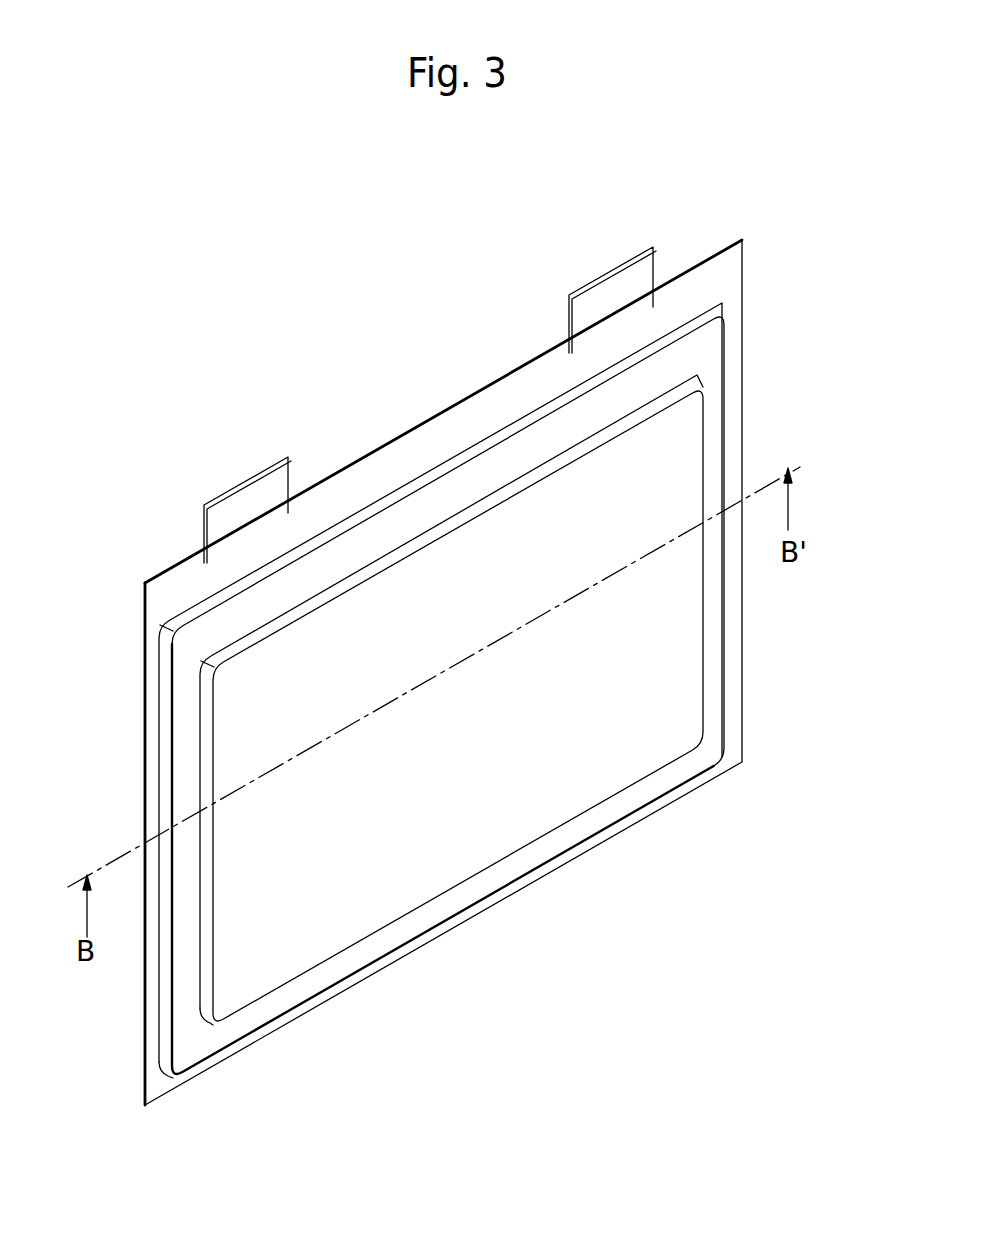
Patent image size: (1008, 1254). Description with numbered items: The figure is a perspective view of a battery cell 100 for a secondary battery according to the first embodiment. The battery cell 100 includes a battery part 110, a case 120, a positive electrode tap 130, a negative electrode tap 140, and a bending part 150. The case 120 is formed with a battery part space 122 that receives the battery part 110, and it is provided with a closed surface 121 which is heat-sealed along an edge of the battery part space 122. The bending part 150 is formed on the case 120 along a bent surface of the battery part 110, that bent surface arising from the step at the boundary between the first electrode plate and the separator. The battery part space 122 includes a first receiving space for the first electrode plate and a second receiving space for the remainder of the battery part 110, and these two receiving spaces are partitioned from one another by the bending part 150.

The battery cell 100 is at (360, 310).
The battery part 110 is at (690, 622).
The case 120 is at (742, 240).
The closed surface 121 is at (737, 303).
The battery part space 122 is at (686, 428).
The positive electrode tap 130 is at (245, 497).
The negative electrode tap 140 is at (608, 288).
The bending part 150 is at (443, 507).